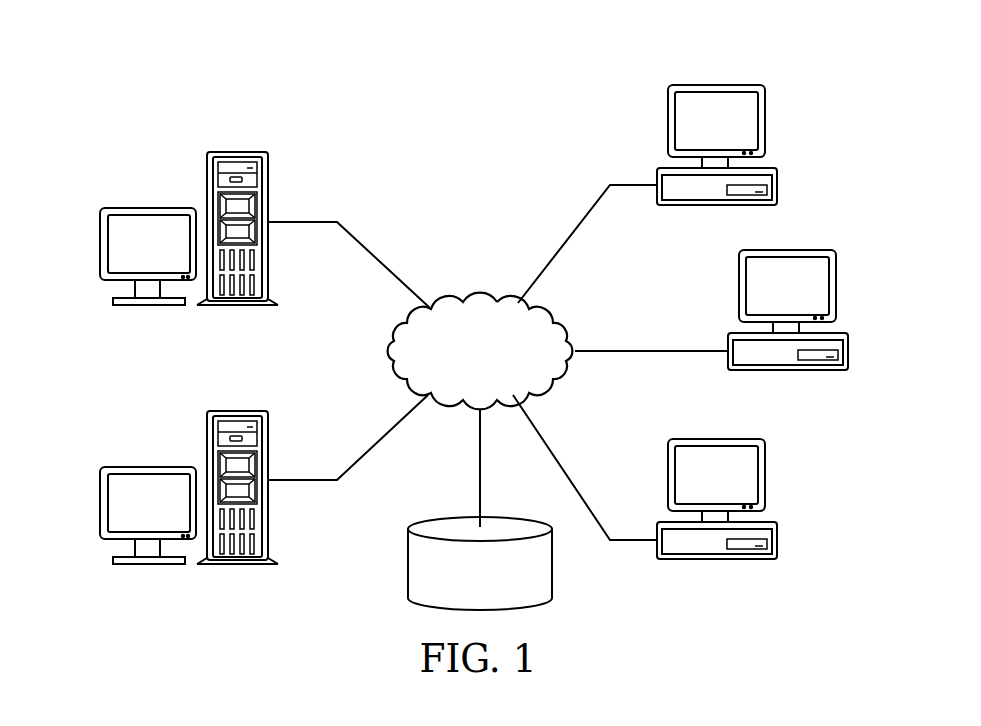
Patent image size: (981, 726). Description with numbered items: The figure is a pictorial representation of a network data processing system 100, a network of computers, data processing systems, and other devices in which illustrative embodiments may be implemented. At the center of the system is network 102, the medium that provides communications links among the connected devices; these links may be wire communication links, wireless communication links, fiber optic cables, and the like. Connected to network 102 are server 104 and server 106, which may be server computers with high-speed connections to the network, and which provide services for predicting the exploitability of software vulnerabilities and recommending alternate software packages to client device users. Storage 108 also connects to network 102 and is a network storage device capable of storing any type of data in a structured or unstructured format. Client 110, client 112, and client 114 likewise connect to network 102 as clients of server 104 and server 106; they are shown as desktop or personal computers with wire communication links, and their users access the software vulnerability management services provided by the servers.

The network data processing system 100 is at (347, 133).
The network 102 is at (450, 298).
The server 104 is at (100, 240).
The server 106 is at (100, 505).
The storage 108 is at (407, 562).
The client 110 is at (780, 177).
The client 112 is at (850, 362).
The client 114 is at (780, 552).